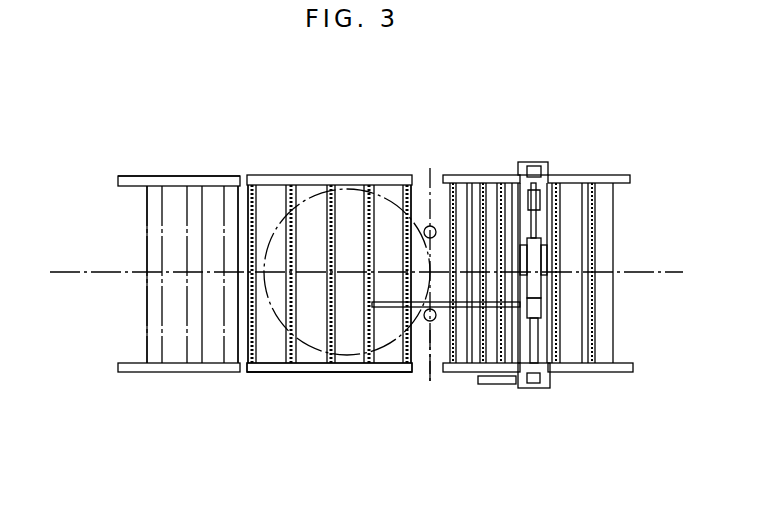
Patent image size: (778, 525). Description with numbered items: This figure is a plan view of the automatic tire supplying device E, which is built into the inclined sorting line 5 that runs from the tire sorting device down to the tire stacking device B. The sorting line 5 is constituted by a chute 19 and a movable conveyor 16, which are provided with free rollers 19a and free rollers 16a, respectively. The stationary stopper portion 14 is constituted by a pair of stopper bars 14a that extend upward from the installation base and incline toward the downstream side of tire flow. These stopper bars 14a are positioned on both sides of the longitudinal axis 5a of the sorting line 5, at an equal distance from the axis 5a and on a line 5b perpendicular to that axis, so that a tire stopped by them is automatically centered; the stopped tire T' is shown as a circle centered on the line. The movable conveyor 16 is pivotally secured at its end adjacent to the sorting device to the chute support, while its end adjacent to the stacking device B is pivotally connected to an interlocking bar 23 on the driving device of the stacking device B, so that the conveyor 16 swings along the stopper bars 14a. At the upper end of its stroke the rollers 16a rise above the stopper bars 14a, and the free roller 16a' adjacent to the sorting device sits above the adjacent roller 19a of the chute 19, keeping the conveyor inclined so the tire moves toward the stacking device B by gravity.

The sorting line 5 is at (216, 170).
The longitudinal axis 5a is at (657, 271).
The line perpendicular to the axis 5b is at (425, 350).
The stationary stopper portion 14 is at (424, 176).
The stopper bars 14a is at (436, 230).
The movable conveyor 16 is at (298, 171).
The free rollers 16a is at (329, 240).
The free roller adjacent to the sorting device 16a' is at (295, 394).
The chute 19 is at (152, 176).
The free rollers 19a is at (198, 208).
The interlocking bar 23 is at (433, 322).
The tire stacking device B is at (562, 162).
The automatic tire supplying device E is at (378, 372).
The stopped tire T' is at (347, 306).